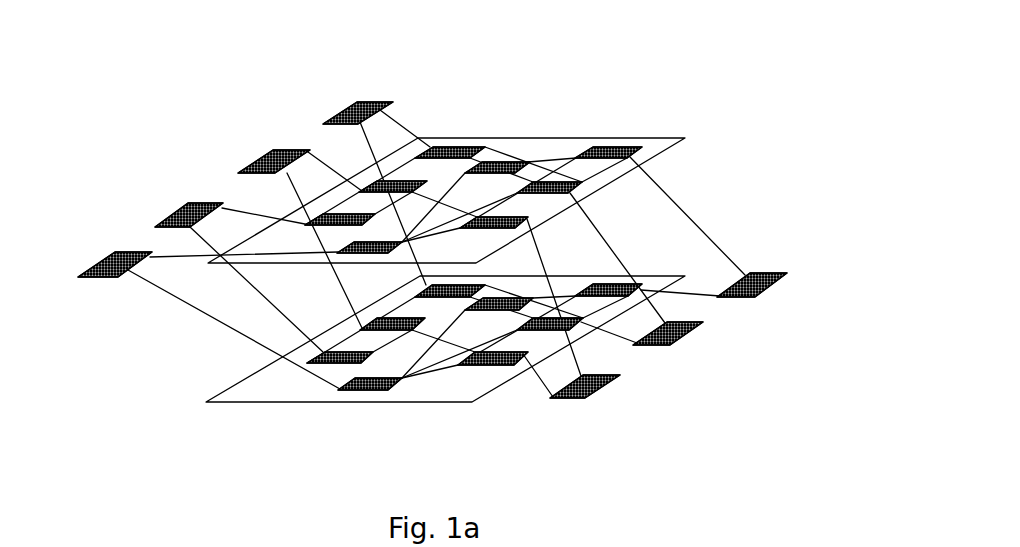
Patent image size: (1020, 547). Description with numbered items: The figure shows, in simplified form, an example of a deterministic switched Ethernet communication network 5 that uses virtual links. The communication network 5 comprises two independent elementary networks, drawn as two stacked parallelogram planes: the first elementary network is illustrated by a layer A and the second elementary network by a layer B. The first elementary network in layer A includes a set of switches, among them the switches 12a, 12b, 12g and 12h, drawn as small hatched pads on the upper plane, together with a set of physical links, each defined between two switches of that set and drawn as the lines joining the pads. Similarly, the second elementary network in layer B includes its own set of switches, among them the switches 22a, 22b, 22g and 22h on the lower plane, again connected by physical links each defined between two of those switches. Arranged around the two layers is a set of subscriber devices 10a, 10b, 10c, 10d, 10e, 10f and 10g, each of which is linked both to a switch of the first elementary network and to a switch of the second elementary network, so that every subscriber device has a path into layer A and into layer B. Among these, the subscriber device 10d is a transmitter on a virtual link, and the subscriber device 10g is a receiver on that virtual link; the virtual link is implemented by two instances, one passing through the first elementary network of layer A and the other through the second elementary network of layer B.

The communication network 5 is at (707, 62).
The subscriber device 10a is at (357, 102).
The subscriber device 10b is at (268, 150).
The subscriber device 10c is at (183, 203).
The subscriber device 10d is at (106, 252).
The subscriber device 10e is at (757, 300).
The subscriber device 10f is at (680, 348).
The subscriber device 10g is at (603, 399).
The switch 12a is at (460, 147).
The switch 12b is at (614, 147).
The switch 12g is at (492, 229).
The switch 12h is at (340, 254).
The switch 22a is at (472, 284).
The switch 22b is at (590, 284).
The switch 22g is at (497, 367).
The switch 22h is at (368, 392).
The layer A is at (543, 138).
The layer B is at (437, 404).